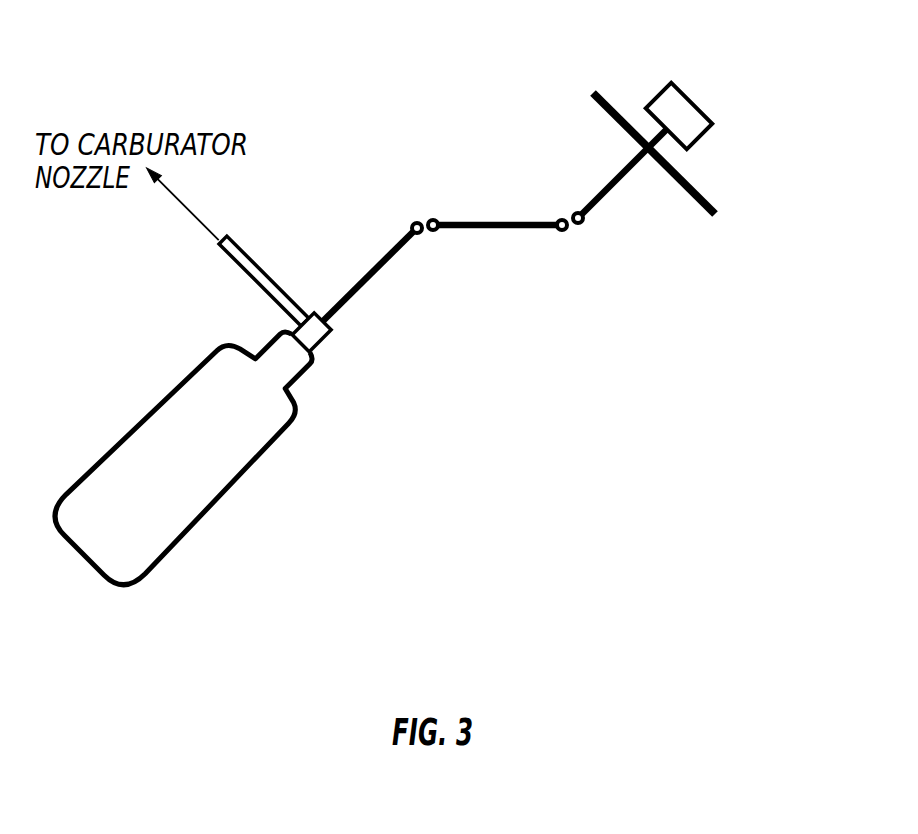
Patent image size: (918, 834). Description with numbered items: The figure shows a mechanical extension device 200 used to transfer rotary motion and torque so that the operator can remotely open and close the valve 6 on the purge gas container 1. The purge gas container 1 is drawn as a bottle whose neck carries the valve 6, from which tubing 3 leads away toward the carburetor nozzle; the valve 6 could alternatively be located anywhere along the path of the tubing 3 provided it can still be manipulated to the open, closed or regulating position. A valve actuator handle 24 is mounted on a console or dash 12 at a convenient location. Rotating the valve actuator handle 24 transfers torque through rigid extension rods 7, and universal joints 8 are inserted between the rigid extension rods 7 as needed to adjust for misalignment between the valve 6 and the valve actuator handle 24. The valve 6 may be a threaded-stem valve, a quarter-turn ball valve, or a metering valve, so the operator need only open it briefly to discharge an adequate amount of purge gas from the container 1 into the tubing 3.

The purge gas container 1 is at (153, 407).
The tubing 3 is at (252, 262).
The valve 6 is at (318, 338).
The rigid extension rods 7 is at (485, 228).
The universal joints 8 is at (560, 220).
The console or dash 12 is at (714, 204).
The valve actuator handle 24 is at (692, 102).
The mechanical extension device 200 is at (558, 428).